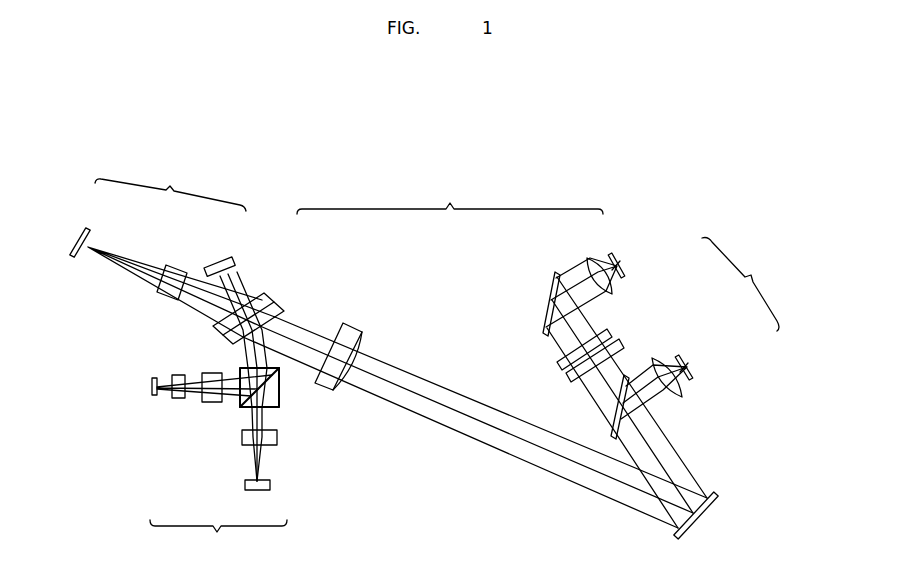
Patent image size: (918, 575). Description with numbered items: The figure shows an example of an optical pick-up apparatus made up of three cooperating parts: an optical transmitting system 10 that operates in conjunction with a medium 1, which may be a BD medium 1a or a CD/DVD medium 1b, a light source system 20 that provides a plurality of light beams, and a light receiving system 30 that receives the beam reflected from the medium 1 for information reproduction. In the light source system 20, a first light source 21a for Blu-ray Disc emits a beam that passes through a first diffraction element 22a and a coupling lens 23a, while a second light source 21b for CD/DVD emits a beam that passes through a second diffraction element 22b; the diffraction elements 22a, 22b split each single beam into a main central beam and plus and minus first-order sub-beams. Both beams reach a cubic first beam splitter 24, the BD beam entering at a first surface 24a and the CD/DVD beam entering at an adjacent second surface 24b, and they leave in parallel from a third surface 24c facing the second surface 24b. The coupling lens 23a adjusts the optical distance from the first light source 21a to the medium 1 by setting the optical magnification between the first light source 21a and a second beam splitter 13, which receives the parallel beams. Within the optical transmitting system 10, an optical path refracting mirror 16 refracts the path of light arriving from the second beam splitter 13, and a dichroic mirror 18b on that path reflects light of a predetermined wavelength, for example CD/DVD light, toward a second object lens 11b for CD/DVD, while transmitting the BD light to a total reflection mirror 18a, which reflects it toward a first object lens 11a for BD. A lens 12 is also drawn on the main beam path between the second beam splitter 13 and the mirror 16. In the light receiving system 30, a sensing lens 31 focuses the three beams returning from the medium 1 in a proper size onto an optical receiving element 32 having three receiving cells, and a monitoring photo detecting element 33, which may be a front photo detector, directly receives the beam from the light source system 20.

The medium 1 is at (740, 285).
The medium for BD 1a is at (623, 260).
The medium for CD/DVD 1b is at (700, 355).
The optical transmitting system 10 is at (450, 197).
The first object lens 11a is at (587, 259).
The second object lens 11b is at (652, 358).
The collimating lens 12 is at (352, 333).
The second beam splitter 13 is at (268, 303).
The optical path refracting mirror 16 is at (718, 488).
The total reflection mirror 18a is at (548, 297).
The dichroic mirror 18b is at (612, 416).
The light source system 20 is at (218, 539).
The first light source 21a is at (153, 389).
The second light source 21b is at (270, 484).
The first diffraction element 22a is at (178, 398).
The second diffraction element 22b is at (275, 442).
The coupling lens 23a is at (213, 403).
The first beam splitter 24 is at (239, 414).
The first surface 24a is at (239, 371).
The second surface 24b is at (271, 407).
The third surface 24c is at (273, 367).
The light receiving system 30 is at (170, 188).
The sensing lens 31 is at (177, 265).
The optical receiving element 32 is at (89, 226).
The monitoring photo detecting element 33 is at (232, 257).